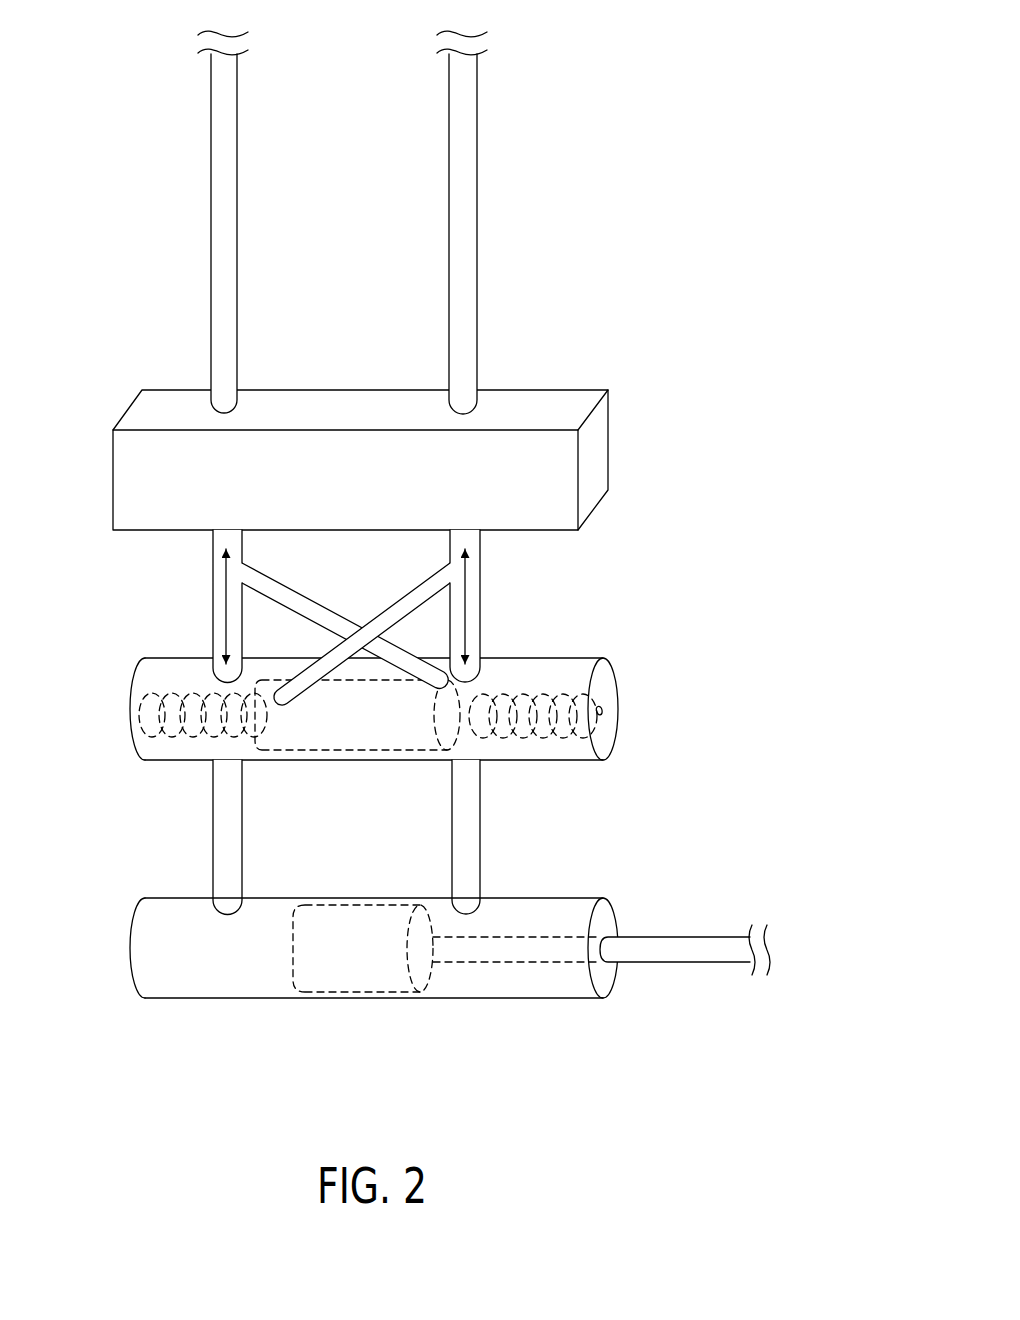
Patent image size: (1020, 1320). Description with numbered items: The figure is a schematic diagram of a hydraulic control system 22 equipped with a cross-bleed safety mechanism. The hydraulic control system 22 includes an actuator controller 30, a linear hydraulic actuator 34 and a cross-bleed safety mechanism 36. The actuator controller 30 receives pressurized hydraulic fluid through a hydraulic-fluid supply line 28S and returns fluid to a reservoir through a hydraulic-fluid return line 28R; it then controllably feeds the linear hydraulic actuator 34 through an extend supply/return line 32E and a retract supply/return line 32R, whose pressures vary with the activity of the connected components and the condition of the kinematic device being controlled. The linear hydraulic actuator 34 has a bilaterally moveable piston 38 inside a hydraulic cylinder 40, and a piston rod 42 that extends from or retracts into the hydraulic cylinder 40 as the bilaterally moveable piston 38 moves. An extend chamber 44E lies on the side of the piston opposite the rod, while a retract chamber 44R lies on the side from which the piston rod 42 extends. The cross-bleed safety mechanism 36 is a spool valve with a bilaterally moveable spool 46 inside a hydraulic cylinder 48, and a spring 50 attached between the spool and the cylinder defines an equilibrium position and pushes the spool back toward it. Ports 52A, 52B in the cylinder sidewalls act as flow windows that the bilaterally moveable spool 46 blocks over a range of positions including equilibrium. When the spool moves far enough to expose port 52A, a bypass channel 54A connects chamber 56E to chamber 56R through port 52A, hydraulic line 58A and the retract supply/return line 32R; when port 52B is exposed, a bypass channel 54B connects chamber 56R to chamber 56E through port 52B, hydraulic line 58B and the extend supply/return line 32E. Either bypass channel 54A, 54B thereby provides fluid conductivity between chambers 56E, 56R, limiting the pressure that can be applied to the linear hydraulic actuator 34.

The hydraulic control system 22 is at (613, 279).
The hydraulic-fluid supply line 28S is at (238, 155).
The hydraulic-fluid return line 28R is at (448, 206).
The actuator controller 30 is at (542, 411).
The extend supply/return line 32E is at (213, 609).
The retract supply/return line 32R is at (483, 612).
The linear hydraulic actuator 34 is at (441, 944).
The cross-bleed safety mechanism 36 is at (421, 685).
The bilaterally moveable piston 38 is at (358, 920).
The hydraulic cylinder 40 is at (258, 982).
The piston rod 42 is at (668, 963).
The extend chamber 44E is at (186, 984).
The retract chamber 44R is at (543, 984).
The bilaterally moveable spool 46 is at (320, 742).
The hydraulic cylinder 48 is at (580, 762).
The spring 50 is at (445, 757).
The port 52A is at (279, 679).
The port 52B is at (426, 667).
The bypass channel 54A is at (455, 570).
The bypass channel 54B is at (232, 580).
The chamber 56E is at (186, 733).
The chamber 56R is at (569, 677).
The hydraulic line 58A is at (396, 602).
The hydraulic line 58B is at (308, 600).